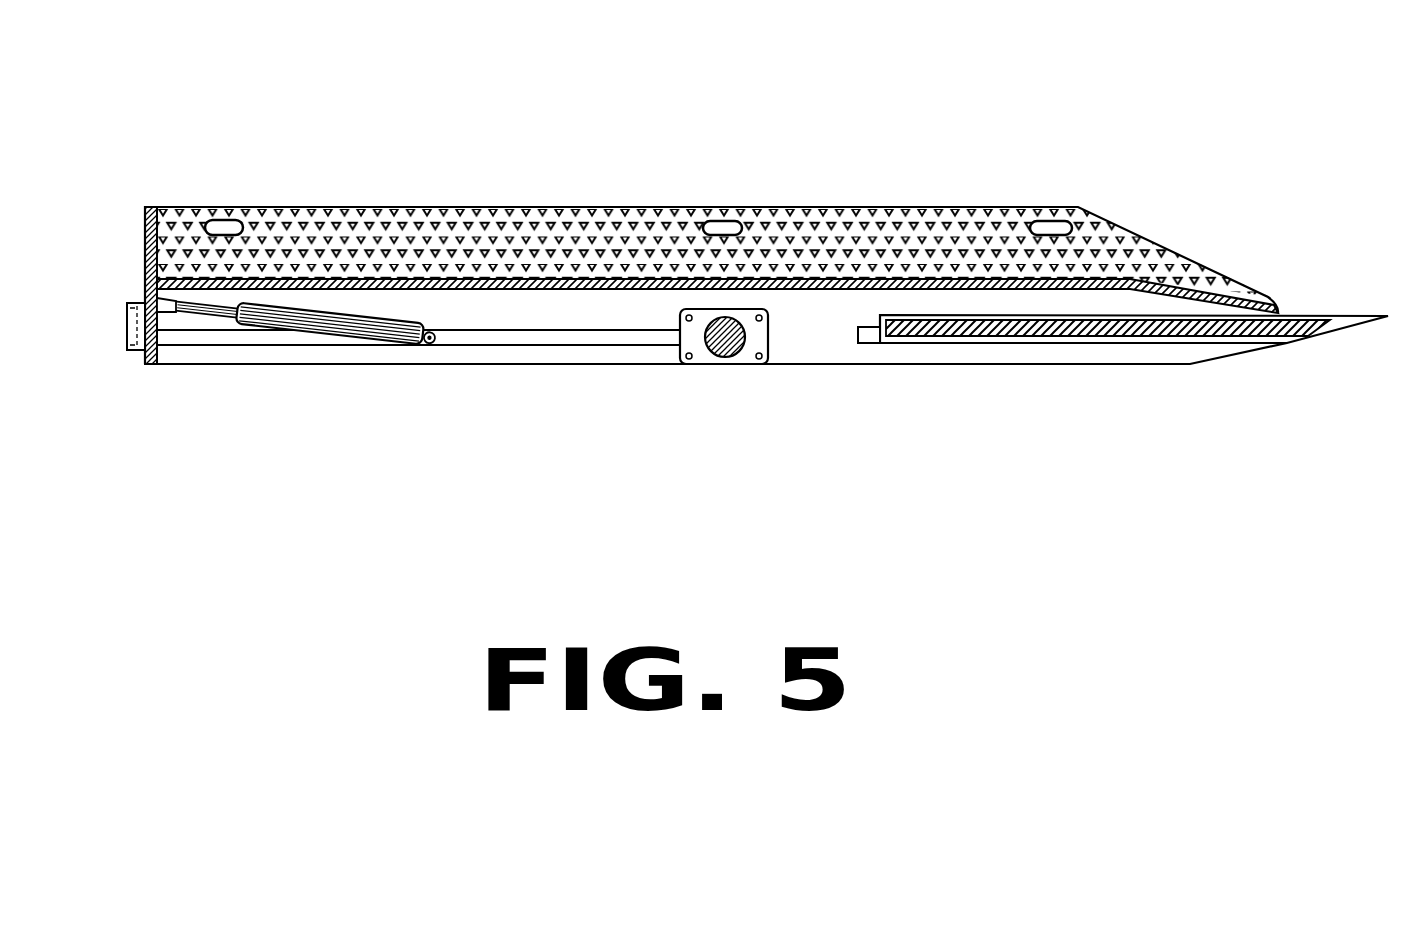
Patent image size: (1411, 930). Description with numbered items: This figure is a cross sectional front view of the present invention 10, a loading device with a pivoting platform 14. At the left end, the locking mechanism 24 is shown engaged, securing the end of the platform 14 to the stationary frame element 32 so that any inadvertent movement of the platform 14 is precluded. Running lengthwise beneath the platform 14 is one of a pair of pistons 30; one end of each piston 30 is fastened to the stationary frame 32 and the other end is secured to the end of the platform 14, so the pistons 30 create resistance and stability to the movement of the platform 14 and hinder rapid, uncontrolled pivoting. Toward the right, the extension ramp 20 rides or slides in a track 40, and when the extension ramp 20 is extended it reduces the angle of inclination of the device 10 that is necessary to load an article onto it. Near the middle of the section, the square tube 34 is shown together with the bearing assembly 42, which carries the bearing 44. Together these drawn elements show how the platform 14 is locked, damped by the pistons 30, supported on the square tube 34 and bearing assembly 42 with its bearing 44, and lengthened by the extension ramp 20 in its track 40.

The present invention 10 is at (1065, 192).
The platform 14 is at (473, 208).
The extension ramp 20 is at (1290, 343).
The locking mechanism 24 is at (137, 302).
The pistons 30 is at (312, 322).
The stationary frame element 32 is at (572, 338).
The square tube 34 is at (727, 345).
The track 40 is at (868, 340).
The bearing assembly 42 is at (768, 342).
The bearing 44 is at (725, 318).